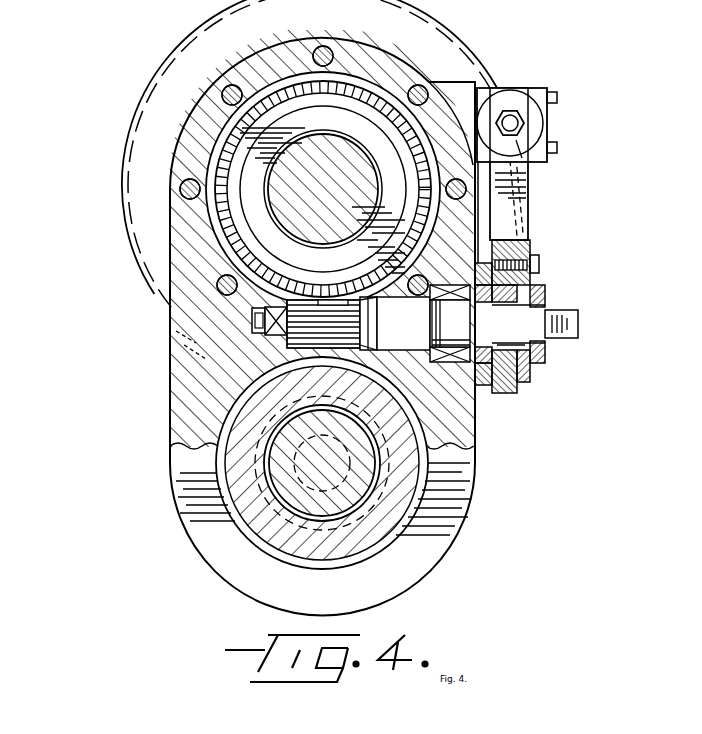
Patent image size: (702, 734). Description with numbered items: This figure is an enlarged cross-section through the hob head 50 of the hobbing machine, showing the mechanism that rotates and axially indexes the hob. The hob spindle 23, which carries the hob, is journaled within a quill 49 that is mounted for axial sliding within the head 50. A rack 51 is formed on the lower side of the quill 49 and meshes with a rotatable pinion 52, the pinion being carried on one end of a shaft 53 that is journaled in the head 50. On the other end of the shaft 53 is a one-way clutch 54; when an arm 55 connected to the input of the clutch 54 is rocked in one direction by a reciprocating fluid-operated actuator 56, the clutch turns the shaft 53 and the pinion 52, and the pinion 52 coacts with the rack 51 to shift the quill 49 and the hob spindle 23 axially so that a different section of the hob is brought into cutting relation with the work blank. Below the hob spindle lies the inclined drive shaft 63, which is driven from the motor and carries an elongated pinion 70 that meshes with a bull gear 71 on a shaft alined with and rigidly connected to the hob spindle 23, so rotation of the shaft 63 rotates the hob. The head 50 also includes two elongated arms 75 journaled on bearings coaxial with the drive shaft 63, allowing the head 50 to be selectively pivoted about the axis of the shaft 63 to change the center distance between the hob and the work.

The hob spindle 23 is at (298, 152).
The quill 49 is at (217, 232).
The head 50 is at (168, 187).
The rack 51 is at (326, 306).
The pinion 52 is at (287, 346).
The shaft 53 is at (378, 323).
The one-way clutch 54 is at (518, 292).
The arm 55 is at (530, 217).
The fluid-operated actuator 56 is at (540, 84).
The shaft 63 is at (293, 497).
The elongated pinion 70 is at (300, 458).
The bull gear 71 is at (133, 123).
The elongated arms 75 is at (183, 293).